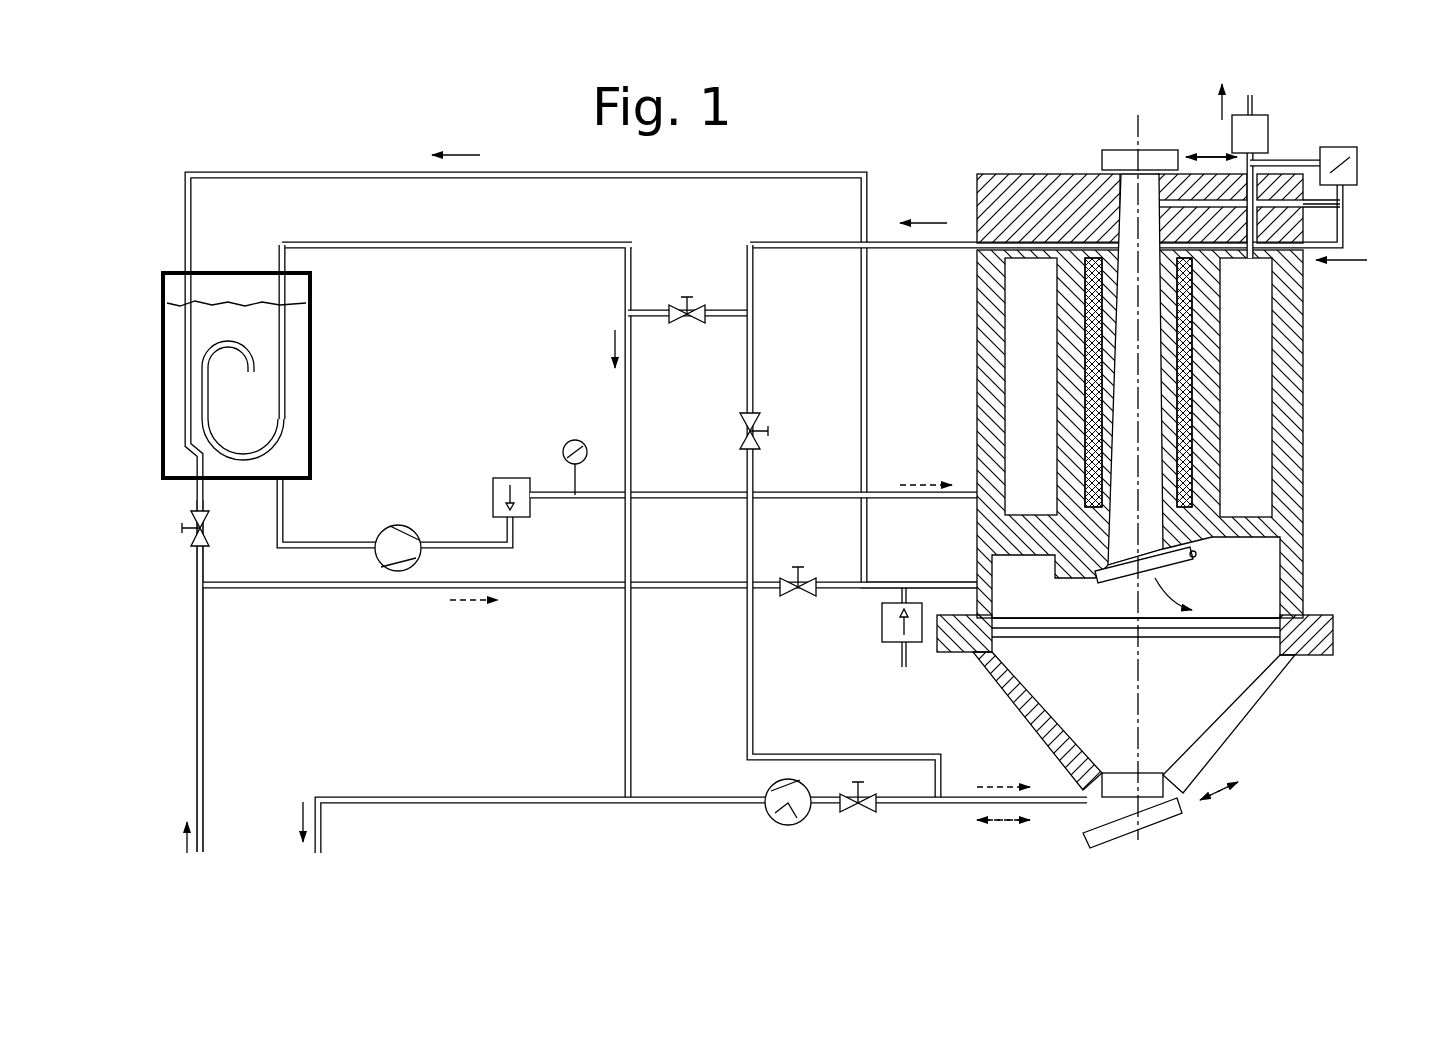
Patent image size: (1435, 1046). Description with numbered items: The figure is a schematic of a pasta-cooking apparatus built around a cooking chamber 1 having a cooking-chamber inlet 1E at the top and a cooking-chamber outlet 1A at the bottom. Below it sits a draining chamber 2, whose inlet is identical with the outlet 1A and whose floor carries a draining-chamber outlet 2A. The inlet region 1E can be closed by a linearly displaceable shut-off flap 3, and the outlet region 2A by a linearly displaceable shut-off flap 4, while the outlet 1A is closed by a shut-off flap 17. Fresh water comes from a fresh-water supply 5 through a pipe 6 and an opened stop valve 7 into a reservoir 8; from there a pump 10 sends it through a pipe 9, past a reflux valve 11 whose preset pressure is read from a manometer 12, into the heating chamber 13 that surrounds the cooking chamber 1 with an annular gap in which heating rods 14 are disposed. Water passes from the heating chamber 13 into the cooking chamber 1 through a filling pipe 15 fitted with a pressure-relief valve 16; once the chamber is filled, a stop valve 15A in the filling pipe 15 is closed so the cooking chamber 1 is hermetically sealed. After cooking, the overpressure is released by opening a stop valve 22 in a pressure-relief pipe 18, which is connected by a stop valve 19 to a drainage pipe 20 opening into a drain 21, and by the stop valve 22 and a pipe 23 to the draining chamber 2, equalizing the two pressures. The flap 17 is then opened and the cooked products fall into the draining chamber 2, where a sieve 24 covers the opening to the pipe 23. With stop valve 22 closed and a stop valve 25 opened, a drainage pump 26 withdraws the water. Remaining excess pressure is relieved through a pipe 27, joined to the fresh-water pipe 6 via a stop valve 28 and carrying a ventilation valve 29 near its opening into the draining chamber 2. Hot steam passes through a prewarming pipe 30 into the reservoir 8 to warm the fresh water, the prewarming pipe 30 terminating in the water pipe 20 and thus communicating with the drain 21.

The cooking chamber 1 is at (1184, 438).
The cooking-chamber outlet 1A is at (1055, 578).
The cooking-chamber inlet 1E is at (1115, 195).
The draining chamber 2 is at (1280, 582).
The draining-chamber outlet 2A is at (1107, 803).
The shut-off flap 3 is at (1133, 158).
The shut-off flap 4 is at (1153, 817).
The fresh-water supply 5 is at (193, 865).
The pipe 6 is at (203, 732).
The stop valve 7 is at (206, 528).
The reservoir 8 is at (296, 404).
The pipe 9 is at (313, 545).
The pump 10 is at (398, 548).
The reflux valve 11 is at (498, 488).
The manometer 12 is at (565, 446).
The heating chamber 13 is at (1243, 357).
The heating rods 14 is at (1193, 423).
The filling pipe 15 is at (1262, 158).
The stop valve 15A is at (1342, 167).
The pressure-relief valve 16 is at (1252, 132).
The shut-off flap 17 is at (1196, 553).
The pressure-relief pipe 18 is at (930, 250).
The stop valve 19 is at (689, 309).
The drainage pipe 20 is at (545, 797).
The drain 21 is at (316, 853).
The stop valve 22 is at (754, 430).
The pipe 23 is at (745, 700).
The sieve 24 is at (1123, 803).
The stop valve 25 is at (858, 812).
The drainage pump 26 is at (772, 813).
The pipe 27 is at (890, 585).
The stop valve 28 is at (800, 582).
The ventilation valve 29 is at (898, 622).
The prewarming pipe 30 is at (237, 170).